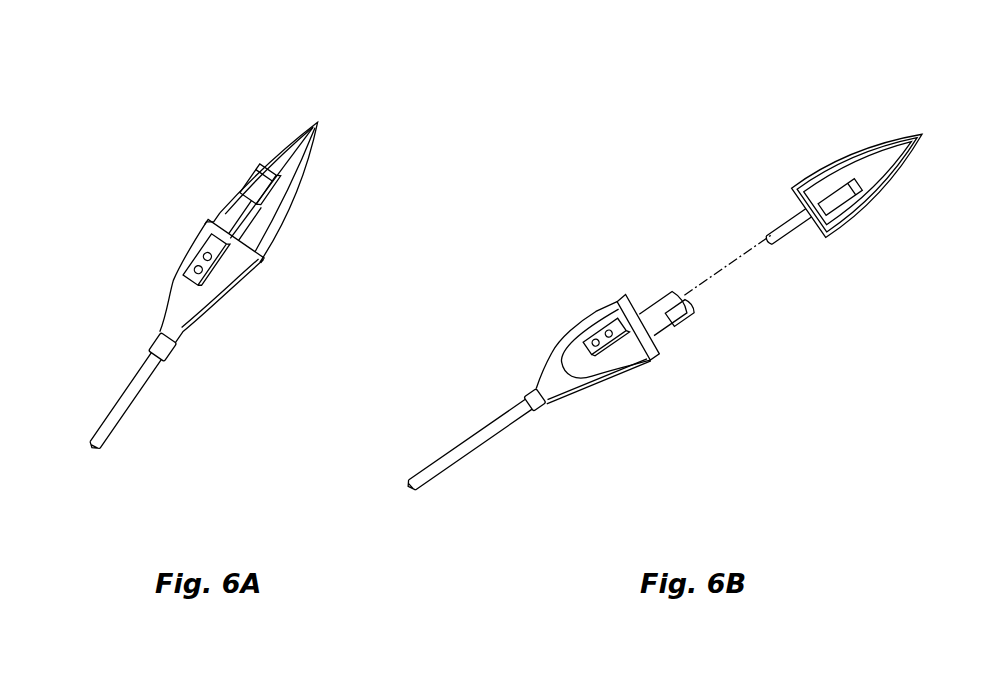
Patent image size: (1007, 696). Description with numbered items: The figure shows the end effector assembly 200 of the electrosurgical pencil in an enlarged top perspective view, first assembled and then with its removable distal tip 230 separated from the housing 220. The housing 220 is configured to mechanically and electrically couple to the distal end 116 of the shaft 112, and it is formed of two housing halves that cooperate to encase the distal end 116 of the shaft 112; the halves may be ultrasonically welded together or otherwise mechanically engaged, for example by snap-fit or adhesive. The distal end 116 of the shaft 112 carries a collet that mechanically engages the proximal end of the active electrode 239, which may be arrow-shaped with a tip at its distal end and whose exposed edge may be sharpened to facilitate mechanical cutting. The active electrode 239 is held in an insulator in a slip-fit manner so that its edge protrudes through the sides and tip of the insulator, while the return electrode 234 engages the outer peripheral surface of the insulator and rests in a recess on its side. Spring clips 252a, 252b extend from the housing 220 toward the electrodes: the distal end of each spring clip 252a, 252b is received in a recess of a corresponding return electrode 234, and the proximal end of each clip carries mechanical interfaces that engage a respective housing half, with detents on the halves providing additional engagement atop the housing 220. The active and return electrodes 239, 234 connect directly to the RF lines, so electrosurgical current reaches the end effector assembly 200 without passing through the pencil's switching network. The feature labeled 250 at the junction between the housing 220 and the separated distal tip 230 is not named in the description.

In FIG. 6A, the end effector assembly 200 is at (196, 239).
In FIG. 6B, the end effector assembly 200 is at (672, 269).
In FIG. 6A, the shaft 112 is at (113, 412).
In FIG. 6B, the shaft 112 is at (499, 440).
In FIG. 6A, the distal end of shaft 116 is at (133, 368).
In FIG. 6A, the housing 220 is at (244, 302).
In FIG. 6B, the housing 220 is at (601, 328).
In FIG. 6A, the tip cover 230 is at (259, 145).
In FIG. 6B, the tip cover 230 is at (844, 135).
In FIG. 6B, the return electrode 234 is at (815, 167).
In FIG. 6B, the active electrode 239 is at (896, 176).
In FIG. 6B, the connector 250 is at (720, 268).
In FIG. 6B, the spring clip 252a is at (657, 307).
In FIG. 6B, the spring clip 252b is at (678, 320).